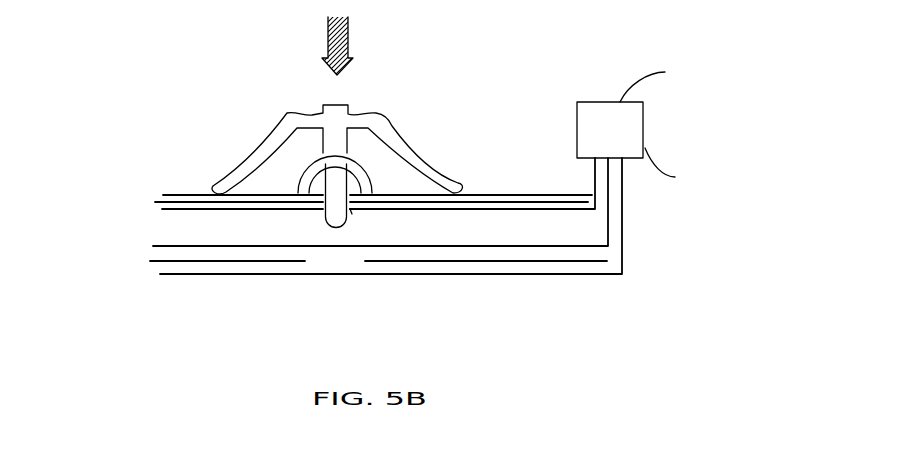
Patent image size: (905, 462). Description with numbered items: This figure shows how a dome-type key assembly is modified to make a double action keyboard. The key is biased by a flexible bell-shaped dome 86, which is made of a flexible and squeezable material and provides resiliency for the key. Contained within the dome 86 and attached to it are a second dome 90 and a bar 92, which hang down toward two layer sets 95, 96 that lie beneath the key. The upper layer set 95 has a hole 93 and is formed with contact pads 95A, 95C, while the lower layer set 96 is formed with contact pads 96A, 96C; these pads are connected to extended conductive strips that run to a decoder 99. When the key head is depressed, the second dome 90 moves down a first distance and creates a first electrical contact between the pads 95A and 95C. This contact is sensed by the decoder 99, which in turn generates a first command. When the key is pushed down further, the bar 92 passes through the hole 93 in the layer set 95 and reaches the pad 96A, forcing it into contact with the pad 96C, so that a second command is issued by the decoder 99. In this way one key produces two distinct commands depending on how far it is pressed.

The flexible bell-shaped dome 86 is at (282, 142).
The second dome 90 is at (357, 162).
The bar 92 is at (337, 220).
The hole 93 is at (350, 216).
The layer set 95 is at (152, 175).
The contact pad 95A is at (283, 193).
The contact pad 95C is at (300, 208).
The layer set 96 is at (145, 233).
The contact pad 96A is at (303, 247).
The contact pad 96C is at (337, 277).
The decoder 99 is at (637, 140).